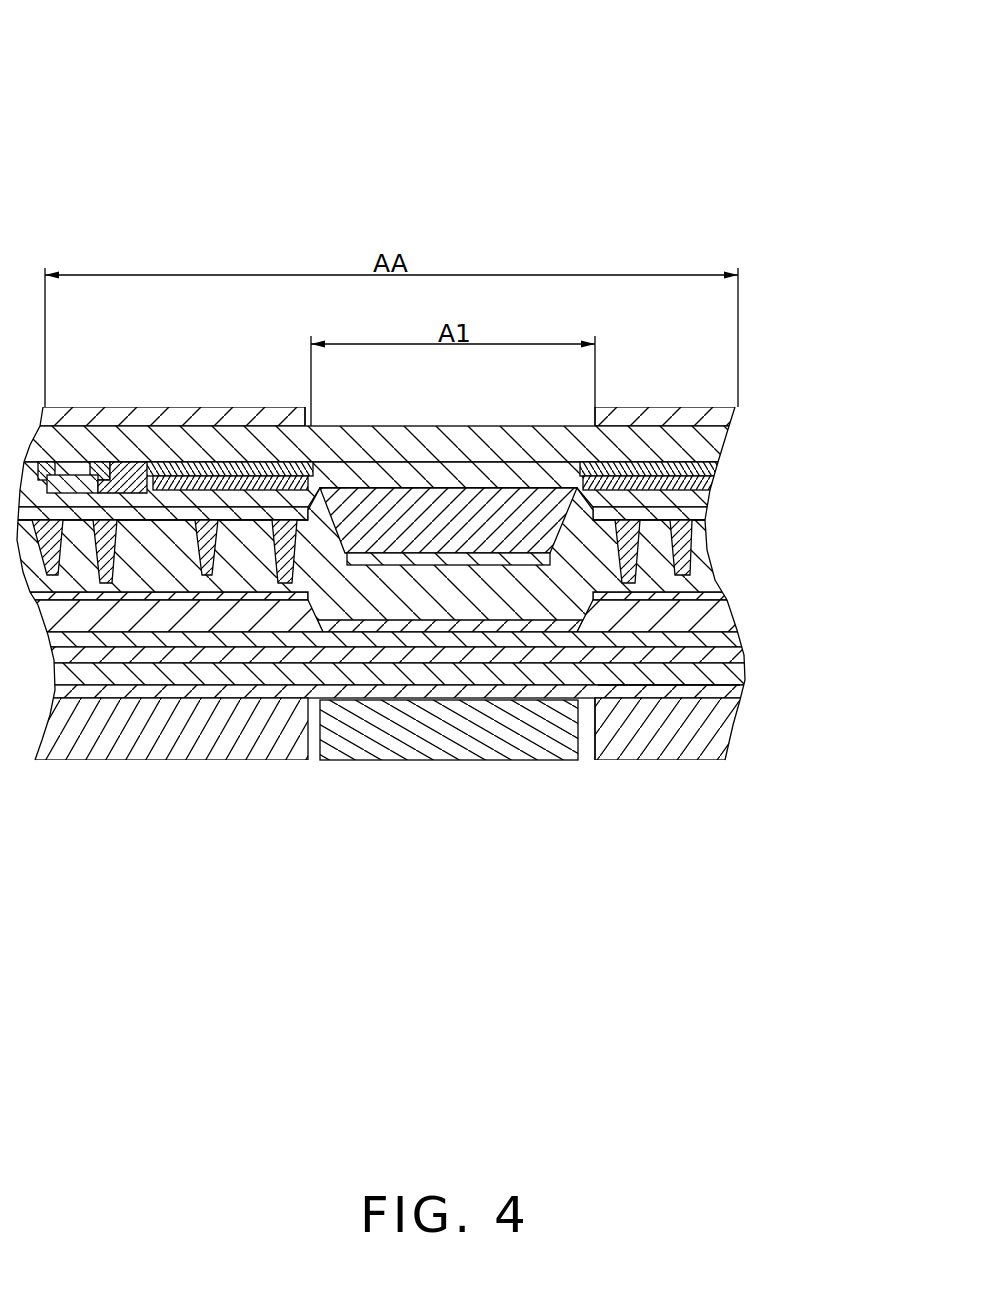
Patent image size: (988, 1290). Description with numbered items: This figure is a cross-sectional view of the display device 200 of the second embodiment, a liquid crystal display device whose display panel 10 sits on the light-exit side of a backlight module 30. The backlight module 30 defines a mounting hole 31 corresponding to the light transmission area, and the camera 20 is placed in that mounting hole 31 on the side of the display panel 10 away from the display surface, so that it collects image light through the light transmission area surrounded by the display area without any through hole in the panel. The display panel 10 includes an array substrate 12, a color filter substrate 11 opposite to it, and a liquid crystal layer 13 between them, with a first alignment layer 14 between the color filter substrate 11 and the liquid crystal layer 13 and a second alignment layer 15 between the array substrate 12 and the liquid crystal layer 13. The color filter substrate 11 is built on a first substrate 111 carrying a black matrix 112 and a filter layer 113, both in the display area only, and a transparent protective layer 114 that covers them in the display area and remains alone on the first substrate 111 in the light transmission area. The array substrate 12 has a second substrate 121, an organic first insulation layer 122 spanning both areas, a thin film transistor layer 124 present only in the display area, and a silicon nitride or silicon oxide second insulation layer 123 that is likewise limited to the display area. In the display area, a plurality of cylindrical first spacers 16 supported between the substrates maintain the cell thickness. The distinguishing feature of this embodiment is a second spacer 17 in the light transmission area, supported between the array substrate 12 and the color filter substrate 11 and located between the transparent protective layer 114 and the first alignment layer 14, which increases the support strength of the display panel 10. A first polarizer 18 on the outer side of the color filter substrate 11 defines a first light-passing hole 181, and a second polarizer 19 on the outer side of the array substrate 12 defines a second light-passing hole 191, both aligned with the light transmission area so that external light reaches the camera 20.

The display device 200 is at (198, 70).
The display panel 10 is at (462, 593).
The color filter substrate 11 is at (417, 469).
The first substrate 111 is at (710, 447).
The black matrix 112 is at (706, 466).
The filter layer 113 is at (700, 482).
The transparent protective layer 114 is at (700, 513).
The array substrate 12 is at (420, 654).
The second substrate 121 is at (715, 675).
The first insulation layer 122 is at (710, 655).
The second insulation layer 123 is at (705, 617).
The thin film transistor layer 124 is at (710, 640).
The liquid crystal layer 13 is at (700, 557).
The first alignment layer 14 is at (710, 518).
The second alignment layer 15 is at (707, 597).
The first spacers 16 is at (700, 530).
The second spacer 17 is at (647, 680).
The first polarizer 18 is at (720, 412).
The first light-passing hole 181 is at (343, 399).
The second polarizer 19 is at (723, 713).
The second light-passing hole 191 is at (592, 692).
The camera 20 is at (410, 740).
The backlight module 30 is at (670, 740).
The mounting hole 31 is at (592, 730).